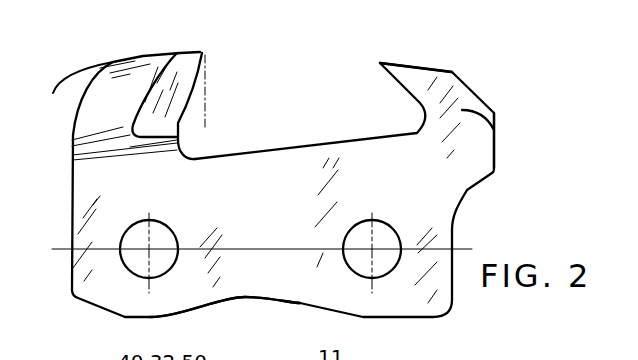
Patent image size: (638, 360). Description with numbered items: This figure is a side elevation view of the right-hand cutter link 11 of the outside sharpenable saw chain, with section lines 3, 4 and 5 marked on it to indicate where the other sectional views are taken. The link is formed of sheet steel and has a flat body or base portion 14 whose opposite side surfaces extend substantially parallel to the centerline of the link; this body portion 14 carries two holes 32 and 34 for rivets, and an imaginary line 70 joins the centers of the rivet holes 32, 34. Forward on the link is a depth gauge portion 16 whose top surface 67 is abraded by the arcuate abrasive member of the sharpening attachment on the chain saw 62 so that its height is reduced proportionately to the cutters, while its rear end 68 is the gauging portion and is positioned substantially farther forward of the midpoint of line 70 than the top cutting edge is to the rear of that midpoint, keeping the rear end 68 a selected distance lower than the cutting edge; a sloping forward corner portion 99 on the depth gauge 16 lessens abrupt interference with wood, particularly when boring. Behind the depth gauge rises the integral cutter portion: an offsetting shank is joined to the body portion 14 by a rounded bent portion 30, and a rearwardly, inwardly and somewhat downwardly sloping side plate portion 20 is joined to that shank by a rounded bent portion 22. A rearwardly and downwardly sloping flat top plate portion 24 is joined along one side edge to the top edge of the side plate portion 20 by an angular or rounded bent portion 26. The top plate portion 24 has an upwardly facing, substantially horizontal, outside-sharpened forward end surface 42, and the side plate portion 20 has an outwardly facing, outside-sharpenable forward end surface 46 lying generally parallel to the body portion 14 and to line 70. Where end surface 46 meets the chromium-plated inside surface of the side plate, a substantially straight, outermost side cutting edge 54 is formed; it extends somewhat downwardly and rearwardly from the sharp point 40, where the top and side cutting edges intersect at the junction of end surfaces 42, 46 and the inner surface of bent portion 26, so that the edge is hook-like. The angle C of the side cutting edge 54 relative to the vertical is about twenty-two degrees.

The section line 3- 3 is at (58, 50).
The section line 4- 4 is at (255, 63).
The section line 5- 5 is at (78, 52).
The cutter link 11 is at (132, 44).
The body portion 14 is at (246, 298).
The depth gauge portion 16 is at (494, 133).
The side plate portion 20 is at (100, 102).
The bent portion 22 is at (97, 150).
The top plate portion 24 is at (141, 54).
The bent portion 26 is at (78, 91).
The bent portion 30 is at (137, 152).
The rivet hole 32 is at (130, 237).
The rivet hole 34 is at (367, 230).
The sharp point 40 is at (202, 53).
The forward end surface of top plate portion 42 is at (175, 53).
The forward end surface of side plate portion 46 is at (172, 98).
The side cutting edge 54 is at (193, 80).
The chain saw 62 is at (360, 4).
The top surface of depth gauge portion 67 is at (410, 63).
The rear end of depth gauge portion 68 is at (380, 63).
The imaginary line 70 is at (272, 249).
The sloping forward corner portion 99 is at (462, 80).
The angle C is at (185, 121).